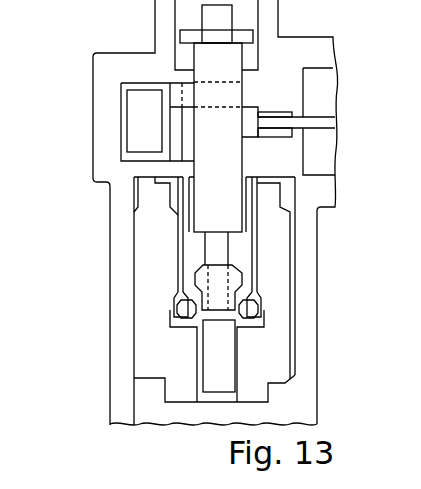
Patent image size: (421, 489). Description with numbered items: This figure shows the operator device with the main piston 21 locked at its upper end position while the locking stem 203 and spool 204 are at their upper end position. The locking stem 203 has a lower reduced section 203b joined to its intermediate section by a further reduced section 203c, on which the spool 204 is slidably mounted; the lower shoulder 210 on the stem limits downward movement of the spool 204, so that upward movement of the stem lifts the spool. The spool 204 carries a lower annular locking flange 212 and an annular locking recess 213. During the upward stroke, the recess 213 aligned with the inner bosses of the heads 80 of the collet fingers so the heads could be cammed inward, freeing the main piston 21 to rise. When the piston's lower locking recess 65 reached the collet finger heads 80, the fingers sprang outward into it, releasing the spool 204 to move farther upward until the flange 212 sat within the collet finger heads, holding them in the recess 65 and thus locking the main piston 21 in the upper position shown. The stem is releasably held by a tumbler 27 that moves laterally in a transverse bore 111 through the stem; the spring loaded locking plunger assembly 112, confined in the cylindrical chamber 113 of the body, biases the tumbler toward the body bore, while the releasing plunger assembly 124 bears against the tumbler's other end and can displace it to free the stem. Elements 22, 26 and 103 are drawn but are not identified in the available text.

The piston 21 is at (138, 357).
The body bore 22 is at (110, 250).
The sleeve 26 is at (183, 263).
The tumbler 27 is at (224, 102).
The lower locking recess 65 is at (262, 323).
The heads of the collet fingers 80 is at (262, 308).
The bonnet cap 103 is at (181, 30).
The transverse bore 111 is at (234, 82).
The spring loaded locking plunger assembly 112 is at (156, 118).
The cylindrical chamber 113 is at (122, 155).
The releasing plunger assembly 124 is at (296, 104).
The locking stem 203 is at (190, 193).
The lower reduced section 203b is at (220, 365).
The further reduced section 203c is at (229, 252).
The spool 204 is at (237, 276).
The lower shoulder 210 is at (240, 322).
The lower annular locking flange 212 is at (172, 310).
The annular locking recess 213 is at (236, 287).